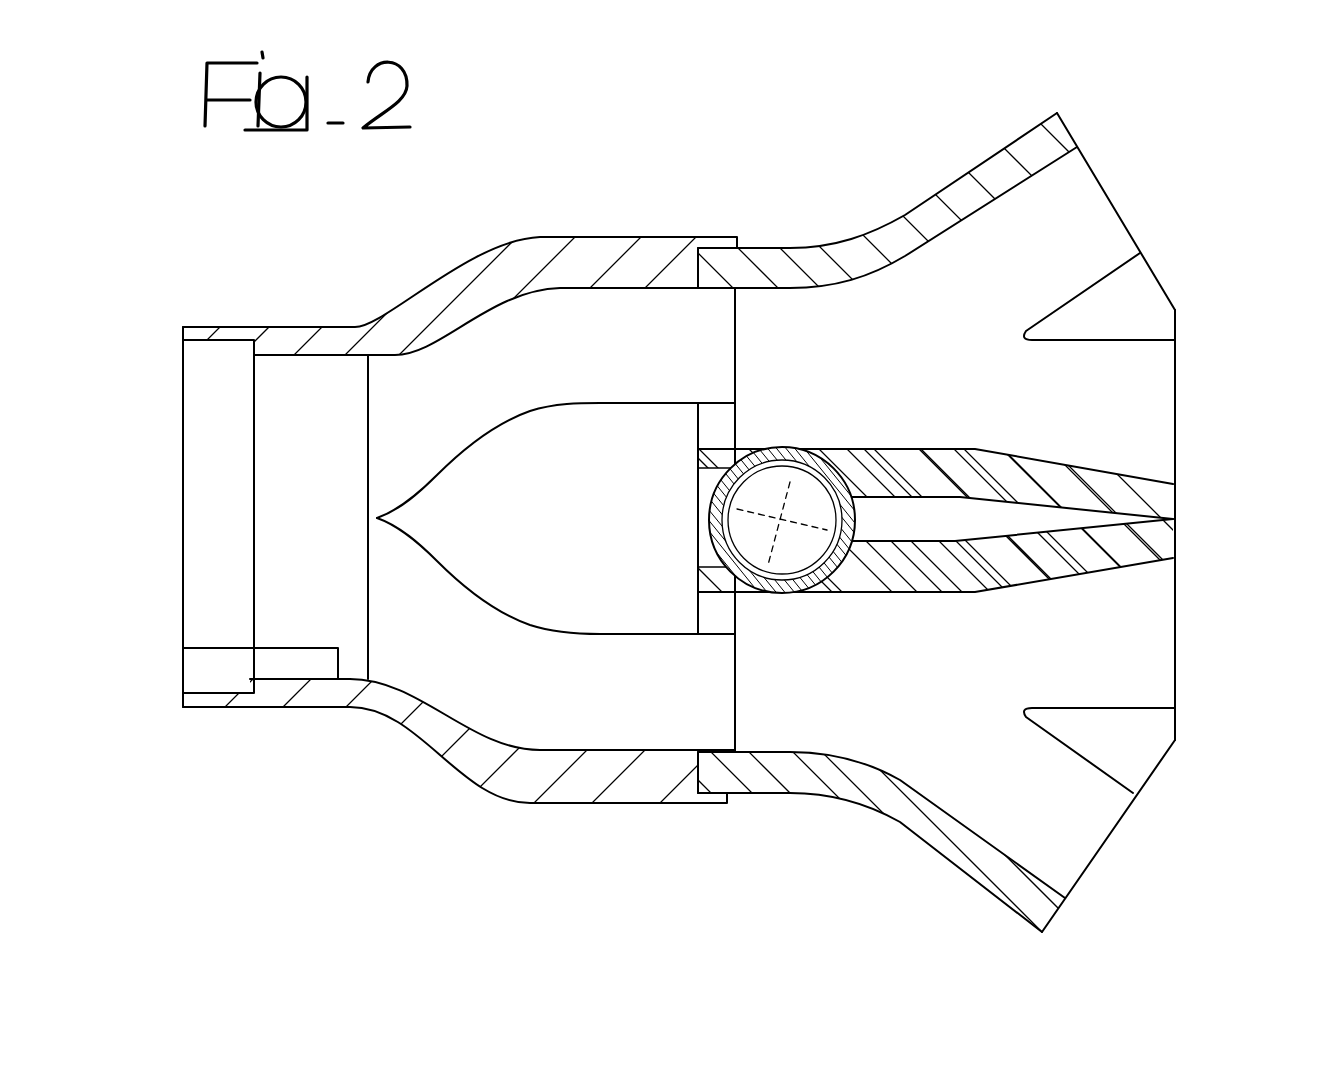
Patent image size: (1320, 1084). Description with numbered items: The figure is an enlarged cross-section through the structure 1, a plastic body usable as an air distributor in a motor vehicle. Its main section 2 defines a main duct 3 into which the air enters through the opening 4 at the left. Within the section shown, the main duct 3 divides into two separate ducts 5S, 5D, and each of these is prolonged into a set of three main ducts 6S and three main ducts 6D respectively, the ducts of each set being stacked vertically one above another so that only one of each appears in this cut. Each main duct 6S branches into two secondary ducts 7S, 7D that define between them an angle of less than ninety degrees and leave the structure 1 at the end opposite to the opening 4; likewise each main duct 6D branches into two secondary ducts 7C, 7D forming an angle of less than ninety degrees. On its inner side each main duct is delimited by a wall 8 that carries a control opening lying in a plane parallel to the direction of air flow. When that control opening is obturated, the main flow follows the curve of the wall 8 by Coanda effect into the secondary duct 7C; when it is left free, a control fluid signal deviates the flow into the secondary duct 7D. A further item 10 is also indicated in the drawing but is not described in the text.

The structure 1 is at (580, 805).
The main section 2 is at (525, 262).
The main duct 3 is at (285, 612).
The opening 4 is at (210, 343).
The separate duct 5S is at (452, 355).
The separate duct 5D is at (467, 680).
The main duct 6S is at (765, 328).
The main duct 6D is at (747, 698).
The secondary duct 7S is at (1075, 205).
The secondary duct 7C is at (1130, 390).
The secondary duct 7D is at (1040, 820).
The wall 8 is at (890, 470).
The flow passage 10 is at (692, 524).